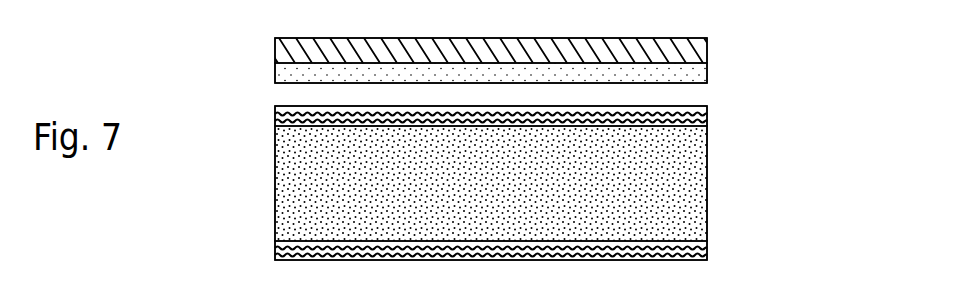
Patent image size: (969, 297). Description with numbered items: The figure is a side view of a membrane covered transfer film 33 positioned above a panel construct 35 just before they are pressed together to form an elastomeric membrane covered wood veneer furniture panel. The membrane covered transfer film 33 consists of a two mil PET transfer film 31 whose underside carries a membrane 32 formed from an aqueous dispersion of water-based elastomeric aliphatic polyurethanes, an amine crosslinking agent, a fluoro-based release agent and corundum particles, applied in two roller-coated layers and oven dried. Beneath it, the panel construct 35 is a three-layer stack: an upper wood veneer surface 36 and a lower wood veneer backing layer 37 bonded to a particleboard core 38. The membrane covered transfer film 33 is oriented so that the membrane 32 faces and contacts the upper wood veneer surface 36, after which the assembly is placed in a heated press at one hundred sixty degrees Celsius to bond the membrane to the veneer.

The PET transfer film 31 is at (707, 50).
The membrane 32 is at (707, 69).
The membrane covered transfer film 33 is at (260, 43).
The panel construct 35 is at (267, 104).
The upper wood veneer surface 36 is at (707, 115).
The lower wood veneer backing layer 37 is at (707, 247).
The particleboard core 38 is at (707, 176).